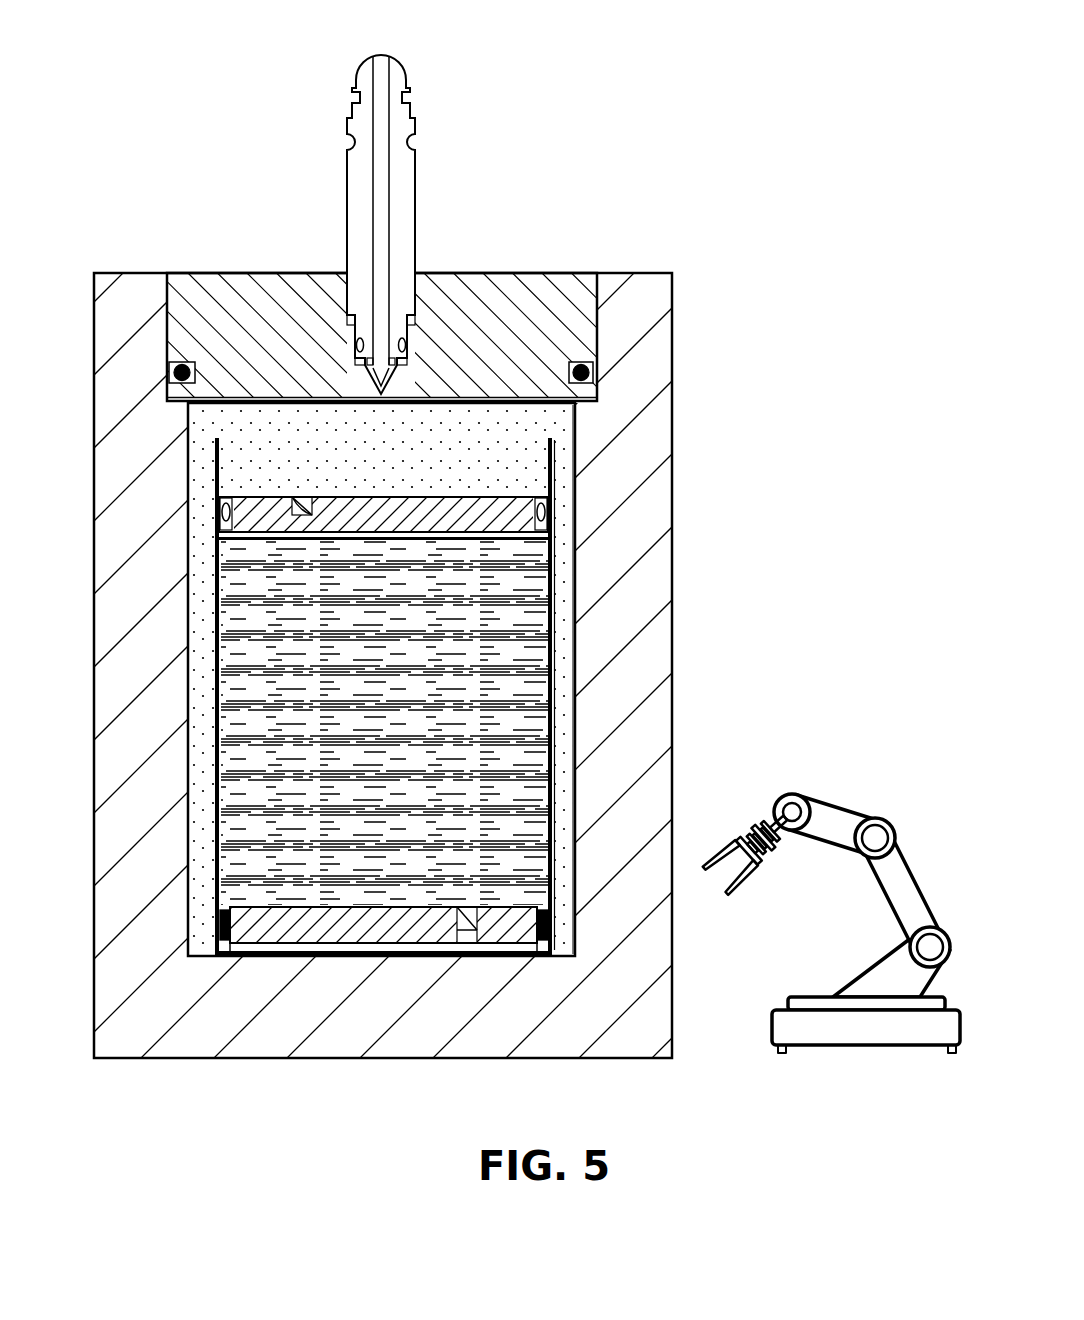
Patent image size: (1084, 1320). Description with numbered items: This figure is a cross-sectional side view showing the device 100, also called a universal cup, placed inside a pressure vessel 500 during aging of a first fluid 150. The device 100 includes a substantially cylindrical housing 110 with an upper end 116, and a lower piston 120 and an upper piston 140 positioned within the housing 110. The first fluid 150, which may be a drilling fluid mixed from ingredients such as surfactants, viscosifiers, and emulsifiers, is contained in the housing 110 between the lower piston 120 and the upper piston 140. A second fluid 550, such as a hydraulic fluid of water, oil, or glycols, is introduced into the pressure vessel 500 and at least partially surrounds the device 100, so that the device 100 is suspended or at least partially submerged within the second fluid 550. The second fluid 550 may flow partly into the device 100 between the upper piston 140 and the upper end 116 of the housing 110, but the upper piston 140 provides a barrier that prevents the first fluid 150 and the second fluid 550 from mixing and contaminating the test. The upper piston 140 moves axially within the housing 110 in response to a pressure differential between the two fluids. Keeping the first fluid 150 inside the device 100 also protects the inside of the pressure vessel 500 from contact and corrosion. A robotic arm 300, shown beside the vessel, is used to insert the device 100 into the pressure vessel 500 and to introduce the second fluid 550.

The pressure vessel 500 is at (213, 130).
The device 100 is at (210, 465).
The upper piston 140 is at (468, 500).
The upper end 116 is at (557, 464).
The second fluid 550 is at (205, 670).
The housing 110 is at (560, 656).
The first fluid 150 is at (318, 765).
The lower piston 120 is at (373, 930).
The robotic arm 300 is at (846, 785).